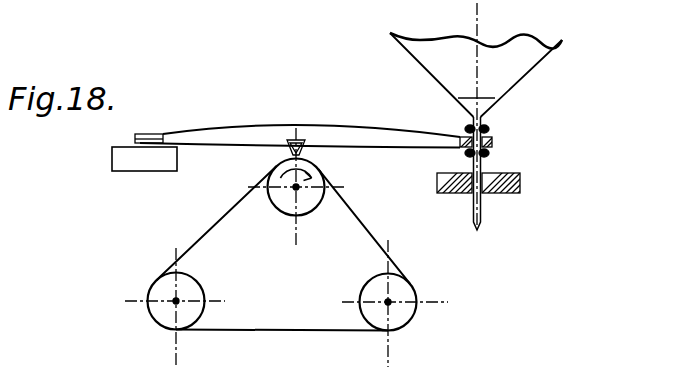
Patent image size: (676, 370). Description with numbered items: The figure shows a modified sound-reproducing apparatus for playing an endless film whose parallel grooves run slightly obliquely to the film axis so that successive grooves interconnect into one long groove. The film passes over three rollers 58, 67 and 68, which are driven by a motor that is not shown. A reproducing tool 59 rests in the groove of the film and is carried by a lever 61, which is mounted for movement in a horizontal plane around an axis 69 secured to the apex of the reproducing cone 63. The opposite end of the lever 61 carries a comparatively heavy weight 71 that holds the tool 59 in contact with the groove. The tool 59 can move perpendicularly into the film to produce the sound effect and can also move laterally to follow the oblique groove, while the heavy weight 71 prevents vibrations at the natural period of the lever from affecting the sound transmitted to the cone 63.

The roller 58 is at (305, 186).
The reproducing tool 59 is at (302, 150).
The lever 61 is at (368, 143).
The reproducing cone 63 is at (512, 63).
The roller 67 is at (160, 318).
The roller 68 is at (397, 292).
The axis 69 is at (484, 125).
The weight 71 is at (128, 157).